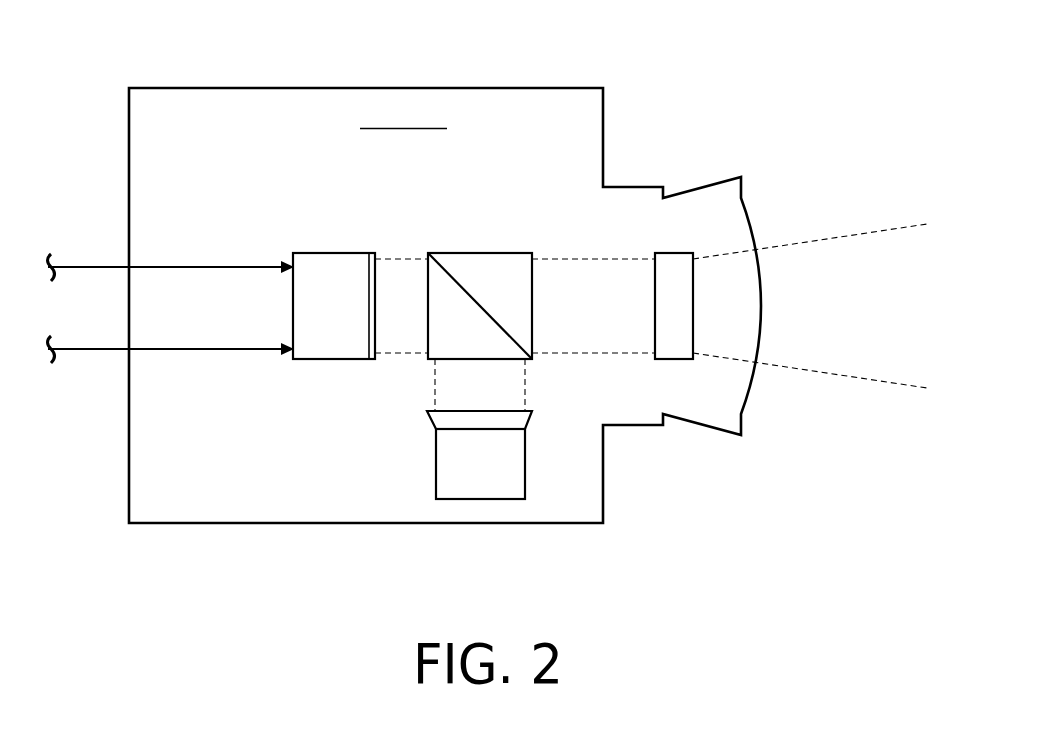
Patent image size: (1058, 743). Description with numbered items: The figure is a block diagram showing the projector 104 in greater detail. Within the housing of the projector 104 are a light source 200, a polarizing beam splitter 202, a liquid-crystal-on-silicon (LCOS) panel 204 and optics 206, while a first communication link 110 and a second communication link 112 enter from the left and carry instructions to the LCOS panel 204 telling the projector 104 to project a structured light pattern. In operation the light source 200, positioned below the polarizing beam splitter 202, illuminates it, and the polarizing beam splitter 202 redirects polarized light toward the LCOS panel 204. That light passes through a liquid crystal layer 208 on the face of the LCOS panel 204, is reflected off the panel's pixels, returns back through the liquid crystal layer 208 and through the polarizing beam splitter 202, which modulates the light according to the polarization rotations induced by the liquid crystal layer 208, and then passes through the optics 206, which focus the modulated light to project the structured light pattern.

The projector 104 is at (183, 88).
The first communication link 110 is at (87, 266).
The second communication link 112 is at (87, 351).
The light source 200 is at (436, 465).
The polarizing beam splitter 202 is at (480, 253).
The liquid-crystal-on-silicon (LCOS) panel 204 is at (310, 253).
The optics 206 is at (678, 253).
The liquid crystal layer 208 is at (372, 253).